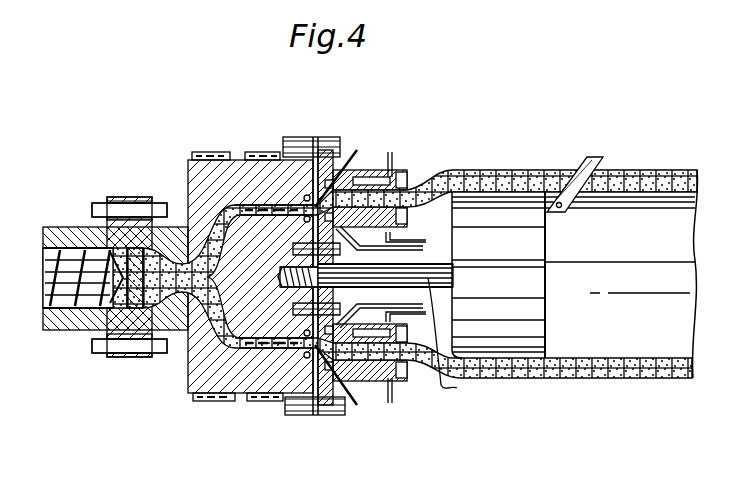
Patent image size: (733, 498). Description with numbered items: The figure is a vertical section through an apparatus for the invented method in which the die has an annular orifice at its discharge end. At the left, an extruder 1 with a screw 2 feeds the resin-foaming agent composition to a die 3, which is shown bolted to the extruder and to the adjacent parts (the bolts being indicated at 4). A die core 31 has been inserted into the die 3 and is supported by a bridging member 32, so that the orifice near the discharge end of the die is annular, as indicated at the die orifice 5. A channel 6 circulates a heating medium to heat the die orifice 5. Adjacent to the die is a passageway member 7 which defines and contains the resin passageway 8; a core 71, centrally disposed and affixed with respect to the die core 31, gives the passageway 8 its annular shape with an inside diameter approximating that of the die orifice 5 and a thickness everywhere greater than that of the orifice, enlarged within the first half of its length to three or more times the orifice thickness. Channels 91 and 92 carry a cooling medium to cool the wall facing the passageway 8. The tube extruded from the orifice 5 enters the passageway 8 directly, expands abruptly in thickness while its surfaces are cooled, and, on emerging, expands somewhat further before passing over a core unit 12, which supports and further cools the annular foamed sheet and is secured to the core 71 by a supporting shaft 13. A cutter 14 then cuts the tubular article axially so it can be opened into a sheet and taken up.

The extruder 1 is at (88, 322).
The screw 2 is at (43, 312).
The die 3 is at (185, 363).
The clamp bolts 4 is at (170, 222).
The die orifice 5 is at (308, 203).
The channel for heating medium 6 is at (288, 397).
The die core 31 is at (218, 401).
The bridging member 32 is at (252, 203).
The passageway member 7 is at (378, 170).
The core of passageway member 71 is at (358, 173).
The cooling medium channel 91 is at (330, 137).
The cooling medium channel 92 is at (407, 210).
The resin passageway 8 is at (378, 385).
The core unit 12 is at (498, 202).
The supporting shaft 13 is at (437, 378).
The cutter 14 is at (586, 157).